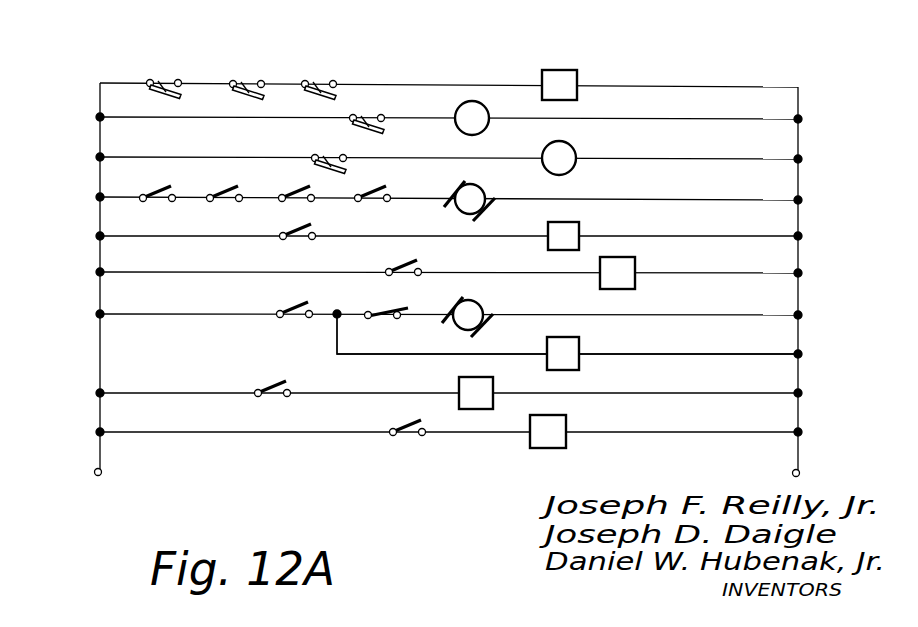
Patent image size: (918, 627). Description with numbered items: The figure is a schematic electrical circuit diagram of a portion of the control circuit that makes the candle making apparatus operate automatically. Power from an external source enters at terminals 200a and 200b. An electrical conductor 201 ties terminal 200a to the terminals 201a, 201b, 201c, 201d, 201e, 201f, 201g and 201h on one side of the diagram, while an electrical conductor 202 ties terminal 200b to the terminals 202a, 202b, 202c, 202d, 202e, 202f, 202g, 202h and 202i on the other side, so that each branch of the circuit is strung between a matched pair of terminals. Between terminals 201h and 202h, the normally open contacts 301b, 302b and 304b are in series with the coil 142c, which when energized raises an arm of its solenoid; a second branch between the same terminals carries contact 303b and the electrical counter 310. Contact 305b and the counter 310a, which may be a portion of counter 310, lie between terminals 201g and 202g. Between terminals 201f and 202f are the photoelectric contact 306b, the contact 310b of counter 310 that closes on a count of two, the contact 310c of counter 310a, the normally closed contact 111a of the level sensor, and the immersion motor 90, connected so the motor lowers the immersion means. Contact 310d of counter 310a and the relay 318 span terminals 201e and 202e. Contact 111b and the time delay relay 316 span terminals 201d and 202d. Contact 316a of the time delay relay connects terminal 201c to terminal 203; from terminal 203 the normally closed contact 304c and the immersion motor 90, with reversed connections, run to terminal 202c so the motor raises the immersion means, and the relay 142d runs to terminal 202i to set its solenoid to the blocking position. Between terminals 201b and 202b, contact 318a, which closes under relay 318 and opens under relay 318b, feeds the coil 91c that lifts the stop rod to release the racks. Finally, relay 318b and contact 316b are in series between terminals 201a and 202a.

The immersion motor 90 is at (484, 188).
The coil of the stop solenoid 91c is at (459, 388).
The normally closed contact of the level sensor 111a is at (365, 197).
The normally open contact of the level sensor 111b is at (400, 266).
The coil of the solenoid 142c is at (565, 70).
The relay of the solenoid 142d is at (580, 346).
The terminal 200a is at (95, 474).
The terminal 200b is at (793, 473).
The electrical conductor 201 is at (100, 452).
The terminal 201a is at (100, 432).
The terminal 201b is at (100, 393).
The terminal 201c is at (100, 314).
The terminal 201d is at (100, 272).
The terminal 201e is at (100, 236).
The terminal 201f is at (100, 197).
The terminal 201g is at (100, 157).
The terminal 201h is at (100, 117).
The electrical conductor 202 is at (798, 452).
The terminal 202a is at (798, 432).
The terminal 202b is at (798, 393).
The terminal 202c is at (798, 315).
The terminal 202d is at (798, 273).
The terminal 202e is at (798, 236).
The terminal 202f is at (798, 200).
The terminal 202g is at (798, 159).
The terminal 202h is at (798, 119).
The terminal 202i is at (798, 354).
The terminal 203 is at (337, 310).
The normally open contact of the electrical switch 301b is at (158, 84).
The normally open contact of the electrical switch 302b is at (243, 85).
The normally open contact of electrical control switch 303b is at (368, 118).
The normally open contact of the electrical control switch 304b is at (318, 86).
The normally closed contact of the electrical control switch 304c is at (376, 313).
The normally open contact of the electrical control switch 305b is at (330, 165).
The contact 306b is at (158, 196).
The electrical counter 310 is at (478, 101).
The electrical counter 310a is at (577, 152).
The normally open electrical contact of the counter 310b is at (222, 195).
The contact of the counter 310c is at (292, 192).
The normally open contact of the counter 310d is at (292, 230).
The time delay relay 316 is at (636, 265).
The normally open contact of the time delay relay 316a is at (292, 310).
The normally open contact of the time delay relay 316b is at (408, 426).
The relay 318 is at (580, 225).
The normally closed contact 318a is at (275, 388).
The relay 318b is at (570, 420).